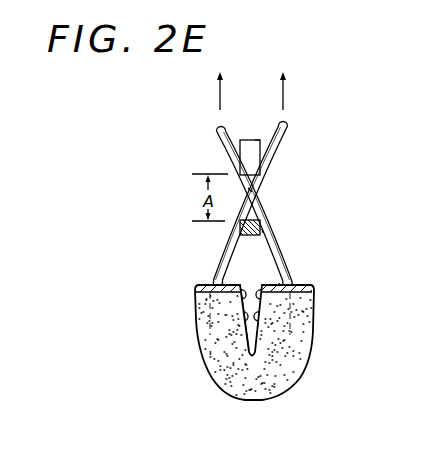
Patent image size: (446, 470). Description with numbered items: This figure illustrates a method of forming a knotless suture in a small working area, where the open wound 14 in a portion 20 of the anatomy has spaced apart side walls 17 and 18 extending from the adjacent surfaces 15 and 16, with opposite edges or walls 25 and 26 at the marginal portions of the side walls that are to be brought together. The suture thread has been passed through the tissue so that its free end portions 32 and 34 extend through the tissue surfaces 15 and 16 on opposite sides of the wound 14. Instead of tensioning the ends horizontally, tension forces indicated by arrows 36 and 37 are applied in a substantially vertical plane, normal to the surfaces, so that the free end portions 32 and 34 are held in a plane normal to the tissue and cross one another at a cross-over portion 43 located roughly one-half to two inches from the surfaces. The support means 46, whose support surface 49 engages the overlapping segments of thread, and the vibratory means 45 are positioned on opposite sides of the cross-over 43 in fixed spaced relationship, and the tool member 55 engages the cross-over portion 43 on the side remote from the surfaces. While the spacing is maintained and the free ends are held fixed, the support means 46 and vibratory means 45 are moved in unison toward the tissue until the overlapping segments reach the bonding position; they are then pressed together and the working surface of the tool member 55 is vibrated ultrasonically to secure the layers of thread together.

The open wound 14 is at (246, 343).
The adjacent surface 15 is at (279, 284).
The adjacent surface 16 is at (224, 283).
The side wall 17 is at (263, 315).
The side wall 18 is at (246, 317).
The portion of the anatomy 20 is at (314, 360).
The edge or wall 25 is at (264, 297).
The edge or wall 26 is at (241, 297).
The free end portion 32 is at (219, 138).
The free end portion 34 is at (282, 150).
The arrow 36 is at (220, 95).
The arrow 37 is at (283, 95).
The cross-over portion 43 is at (262, 199).
The vibratory means 45 is at (262, 137).
The support means 46 is at (262, 231).
The support surface 49 is at (257, 217).
The tool member 55 is at (240, 140).